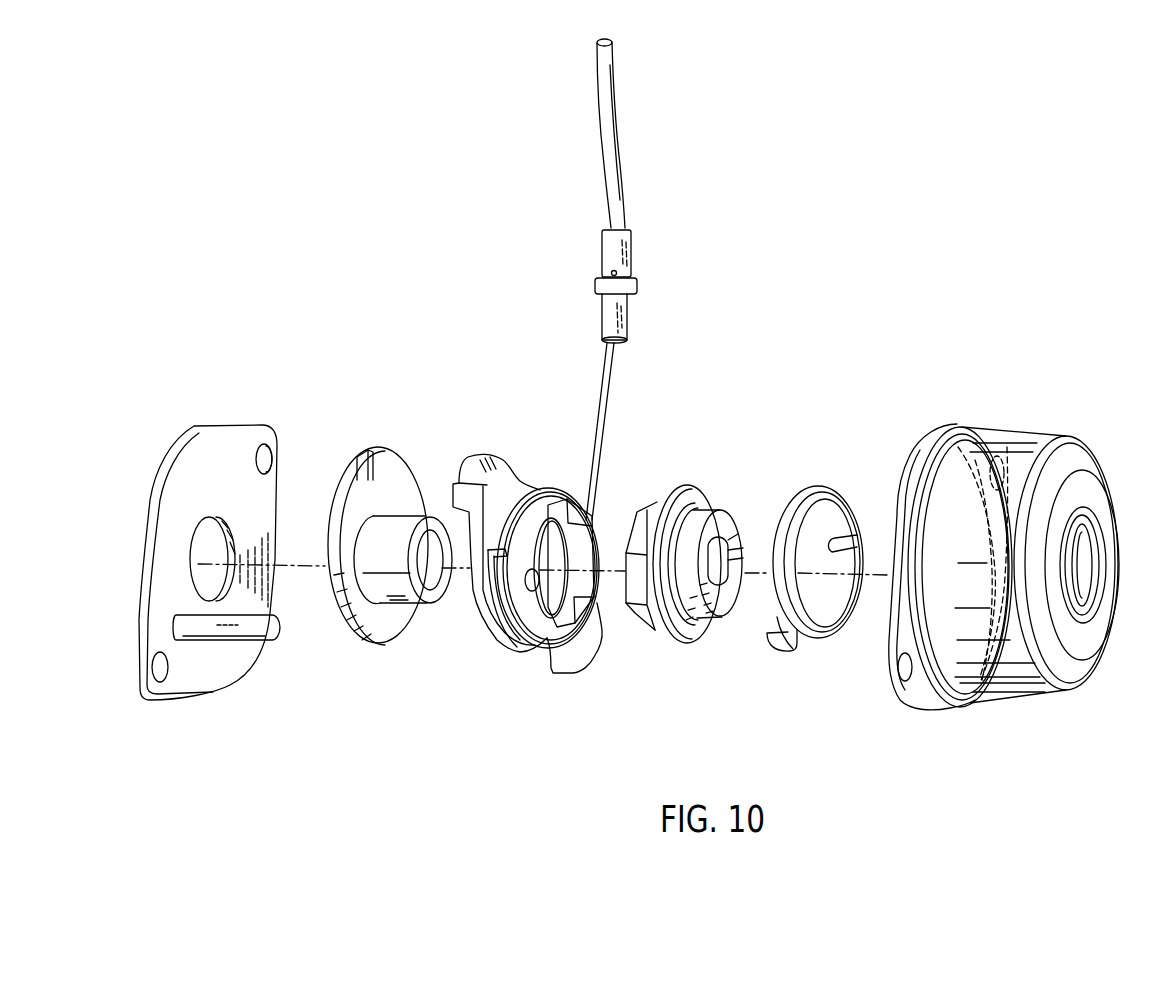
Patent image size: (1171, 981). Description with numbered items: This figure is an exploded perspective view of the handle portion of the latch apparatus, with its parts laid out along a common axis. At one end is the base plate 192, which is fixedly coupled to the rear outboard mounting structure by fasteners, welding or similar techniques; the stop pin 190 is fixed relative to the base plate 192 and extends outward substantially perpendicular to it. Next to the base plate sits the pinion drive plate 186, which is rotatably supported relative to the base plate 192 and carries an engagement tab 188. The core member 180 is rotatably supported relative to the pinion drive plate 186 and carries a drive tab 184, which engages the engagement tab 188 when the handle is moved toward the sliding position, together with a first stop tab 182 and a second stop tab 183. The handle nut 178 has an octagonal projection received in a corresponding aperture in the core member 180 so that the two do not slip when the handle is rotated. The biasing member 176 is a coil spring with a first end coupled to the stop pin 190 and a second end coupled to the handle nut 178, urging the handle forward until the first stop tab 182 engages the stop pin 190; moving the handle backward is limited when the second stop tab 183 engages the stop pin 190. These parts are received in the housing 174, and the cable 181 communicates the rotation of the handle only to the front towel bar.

The housing 174 is at (1023, 443).
The biasing member 176 is at (838, 640).
The handle nut 178 is at (687, 483).
The core member 180 is at (539, 478).
The cable 181 is at (613, 121).
The first stop tab 182 is at (503, 608).
The second stop tab 183 is at (576, 675).
The drive tab 184 is at (457, 455).
The pinion drive plate 186 is at (345, 645).
The engagement tab 188 is at (357, 462).
The stop pin 190 is at (262, 648).
The base plate 192 is at (210, 425).